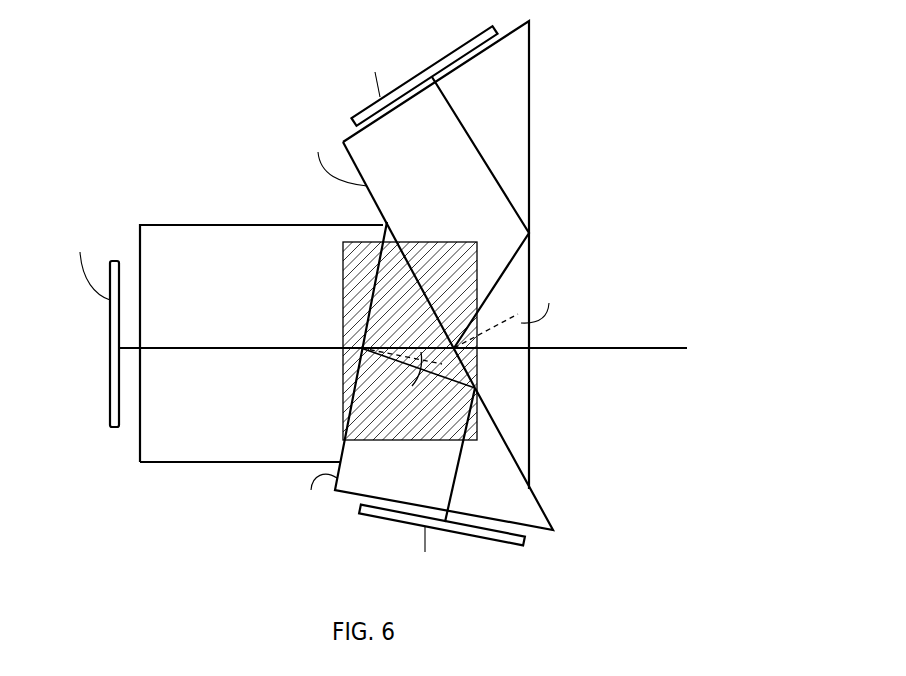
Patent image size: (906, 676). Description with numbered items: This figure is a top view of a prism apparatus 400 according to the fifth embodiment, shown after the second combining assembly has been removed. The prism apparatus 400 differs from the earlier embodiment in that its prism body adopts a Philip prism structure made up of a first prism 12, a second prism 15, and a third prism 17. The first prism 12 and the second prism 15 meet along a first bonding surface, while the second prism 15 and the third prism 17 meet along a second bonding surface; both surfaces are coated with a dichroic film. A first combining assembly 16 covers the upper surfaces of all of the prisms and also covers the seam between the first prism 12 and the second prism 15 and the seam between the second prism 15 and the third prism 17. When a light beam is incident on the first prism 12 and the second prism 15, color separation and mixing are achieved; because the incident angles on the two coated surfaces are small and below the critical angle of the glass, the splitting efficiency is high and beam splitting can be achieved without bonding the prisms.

The prism apparatus 400 is at (170, 214).
The first prism 12 is at (500, 107).
The second prism 15 is at (515, 512).
The first combining assembly 16 is at (341, 212).
The third prism 17 is at (193, 441).